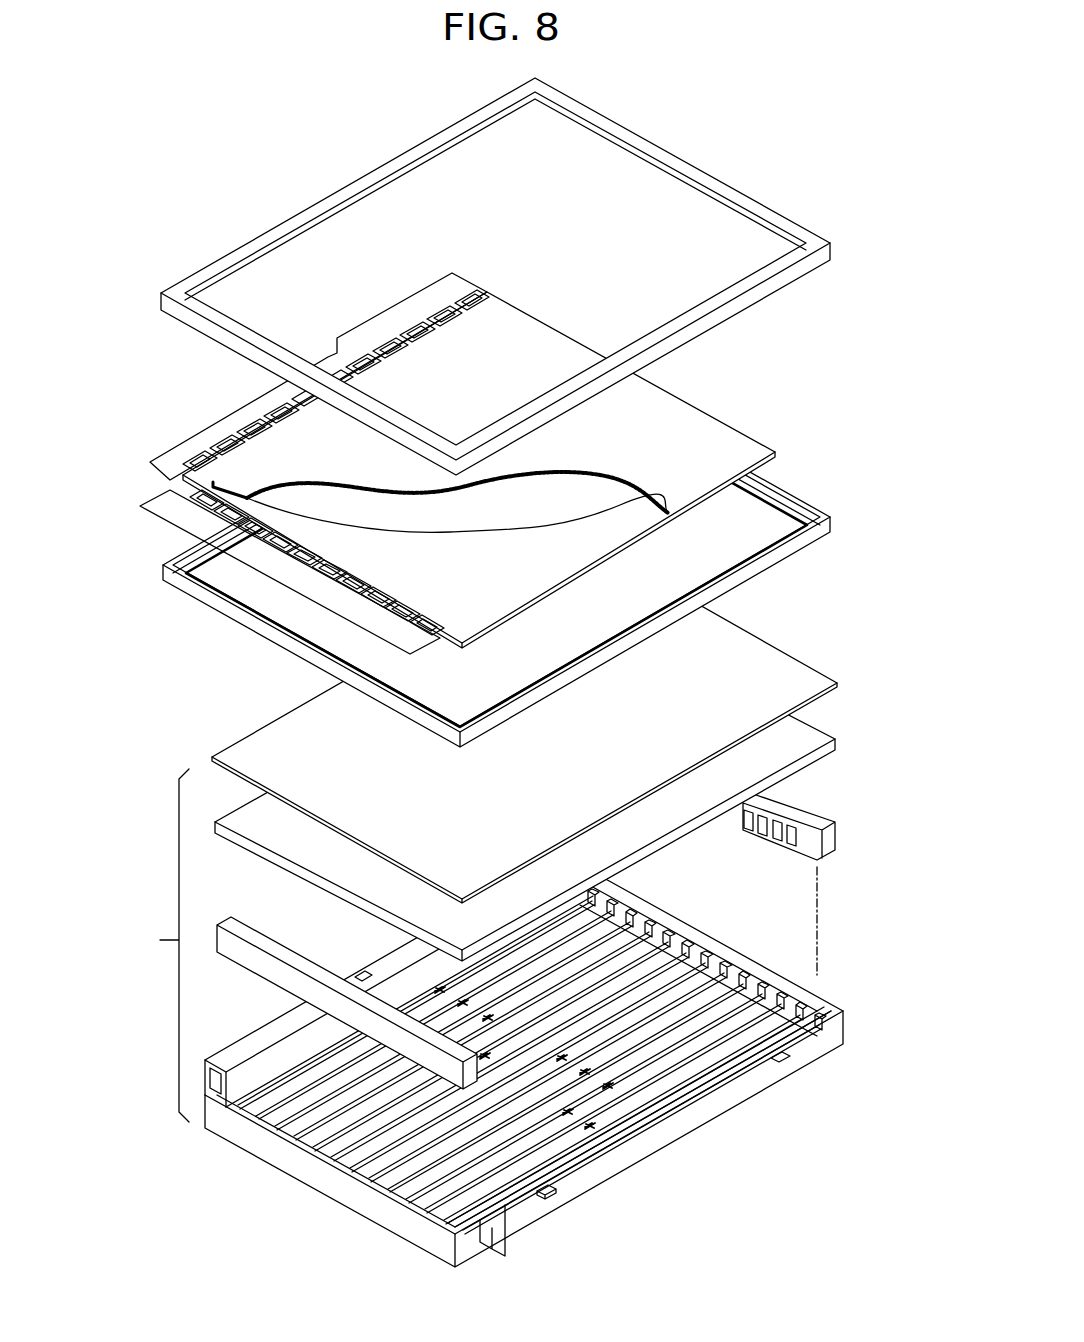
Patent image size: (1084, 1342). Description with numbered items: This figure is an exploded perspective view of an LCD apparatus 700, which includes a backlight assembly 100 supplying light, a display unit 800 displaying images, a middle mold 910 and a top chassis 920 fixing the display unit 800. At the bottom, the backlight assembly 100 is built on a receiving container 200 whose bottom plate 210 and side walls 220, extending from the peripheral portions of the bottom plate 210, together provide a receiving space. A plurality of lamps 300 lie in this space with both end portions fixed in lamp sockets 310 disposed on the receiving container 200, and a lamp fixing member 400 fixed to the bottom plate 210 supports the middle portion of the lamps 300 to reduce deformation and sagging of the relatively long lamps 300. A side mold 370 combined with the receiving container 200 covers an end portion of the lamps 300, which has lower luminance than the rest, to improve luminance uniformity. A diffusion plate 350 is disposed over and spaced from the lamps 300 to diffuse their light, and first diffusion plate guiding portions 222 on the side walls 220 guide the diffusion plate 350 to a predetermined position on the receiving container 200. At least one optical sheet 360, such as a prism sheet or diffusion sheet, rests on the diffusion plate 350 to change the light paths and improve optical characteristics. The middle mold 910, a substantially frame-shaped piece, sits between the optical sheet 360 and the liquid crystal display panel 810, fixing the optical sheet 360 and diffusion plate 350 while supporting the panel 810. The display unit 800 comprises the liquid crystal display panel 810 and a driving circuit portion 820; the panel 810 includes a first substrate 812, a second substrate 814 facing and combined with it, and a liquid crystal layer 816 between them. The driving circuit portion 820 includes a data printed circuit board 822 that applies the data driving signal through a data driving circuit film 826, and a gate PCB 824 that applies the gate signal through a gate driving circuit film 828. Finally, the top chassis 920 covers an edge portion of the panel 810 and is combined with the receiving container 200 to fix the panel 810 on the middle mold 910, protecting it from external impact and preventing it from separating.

The backlight assembly 100 is at (505, 904).
The receiving container 200 is at (548, 1051).
The bottom plate 210 is at (727, 1068).
The side walls 220 is at (812, 1072).
The first diffusion plate guiding portion 222 is at (552, 1196).
The lamps 300 is at (542, 1171).
The lamp sockets 310 is at (712, 964).
The diffusion plate 350 is at (828, 725).
The optical sheet 360 is at (820, 660).
The side mold 370 is at (820, 805).
The lamp fixing member 400 is at (628, 1081).
The LCD apparatus 700 is at (348, 170).
The display unit 800 is at (185, 420).
The liquid crystal display panel 810 is at (512, 470).
The first substrate 812 is at (547, 568).
The second substrate 814 is at (685, 492).
The liquid crystal layer 816 is at (573, 495).
The driving circuit portion 820 is at (288, 440).
The data printed circuit board 822 is at (355, 337).
The gate PCB 824 is at (175, 513).
The data driving circuit film 826 is at (420, 340).
The gate driving circuit film 828 is at (220, 508).
The middle mold 910 is at (820, 500).
The top chassis 920 is at (800, 215).